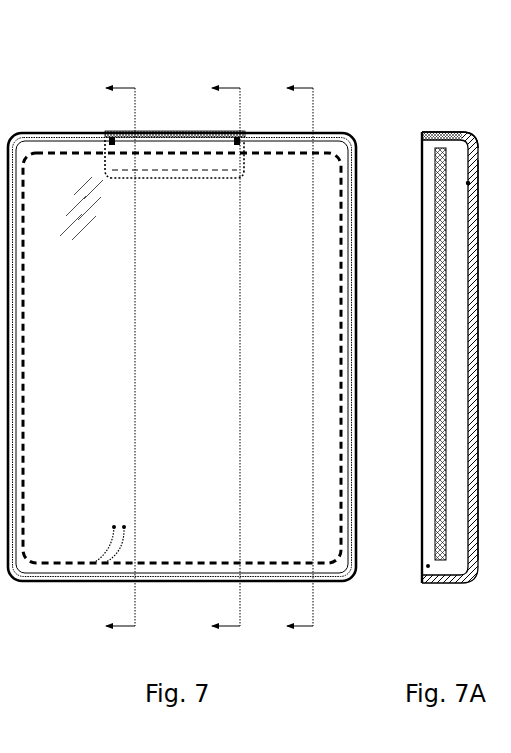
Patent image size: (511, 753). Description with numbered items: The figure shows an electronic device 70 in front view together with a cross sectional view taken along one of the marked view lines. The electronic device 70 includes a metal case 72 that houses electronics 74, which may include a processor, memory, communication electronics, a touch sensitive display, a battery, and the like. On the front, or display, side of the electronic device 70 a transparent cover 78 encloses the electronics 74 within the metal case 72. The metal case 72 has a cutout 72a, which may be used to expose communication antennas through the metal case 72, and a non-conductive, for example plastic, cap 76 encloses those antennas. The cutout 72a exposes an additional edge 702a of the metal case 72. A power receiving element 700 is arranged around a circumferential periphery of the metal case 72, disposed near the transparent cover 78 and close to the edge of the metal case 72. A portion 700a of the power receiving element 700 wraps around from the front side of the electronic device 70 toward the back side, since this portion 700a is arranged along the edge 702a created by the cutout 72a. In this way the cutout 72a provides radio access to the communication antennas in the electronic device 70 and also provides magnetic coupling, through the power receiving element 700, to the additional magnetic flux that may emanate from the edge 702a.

In FIG. 7, the electronic device 70 is at (29, 74).
In FIG. 7A, the electronic device 70 is at (448, 76).
In FIG. 7, the metal case 72 is at (334, 582).
In FIG. 7A, the metal case 72 is at (449, 584).
In FIG. 7, the cutout 72a is at (172, 182).
In FIG. 7A, the electronics 74 is at (435, 370).
In FIG. 7, the non-conductive cap 76 is at (216, 130).
In FIG. 7A, the non-conductive cap 76 is at (441, 131).
In FIG. 7, the transparent cover 78 is at (86, 532).
In FIG. 7A, the transparent cover 78 is at (422, 462).
In FIG. 7, the power receiving element 700 is at (24, 352).
In FIG. 7, the portion of the power receiving element 700a is at (201, 171).
In FIG. 7A, the portion of the power receiving element 700a is at (468, 183).
In FIG. 7A, the additional edge 702a is at (483, 178).